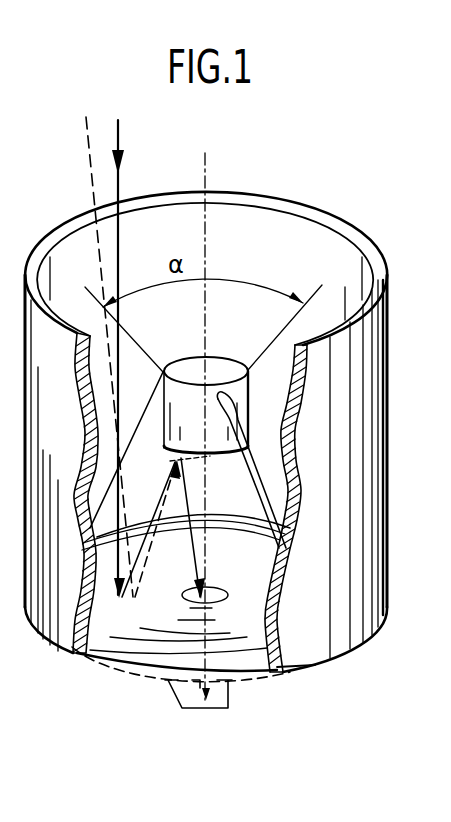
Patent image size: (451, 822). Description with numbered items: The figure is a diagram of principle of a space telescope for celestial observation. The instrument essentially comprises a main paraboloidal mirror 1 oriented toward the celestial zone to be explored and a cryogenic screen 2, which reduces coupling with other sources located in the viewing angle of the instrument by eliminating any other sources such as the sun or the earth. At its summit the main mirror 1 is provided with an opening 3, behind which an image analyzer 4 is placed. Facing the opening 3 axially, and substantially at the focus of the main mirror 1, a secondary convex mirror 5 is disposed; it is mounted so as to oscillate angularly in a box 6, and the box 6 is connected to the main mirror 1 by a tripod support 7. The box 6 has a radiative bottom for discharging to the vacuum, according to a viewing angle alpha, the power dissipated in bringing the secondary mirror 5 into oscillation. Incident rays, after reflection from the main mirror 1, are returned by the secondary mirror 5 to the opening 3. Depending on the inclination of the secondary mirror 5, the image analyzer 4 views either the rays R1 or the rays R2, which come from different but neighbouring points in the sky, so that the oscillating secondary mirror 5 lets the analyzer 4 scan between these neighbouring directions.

The main paraboloidal mirror 1 is at (150, 641).
The cryogenic screen 2 is at (345, 467).
The opening 3 is at (227, 585).
The image analyzer 4 is at (198, 710).
The secondary convex mirror 5 is at (175, 460).
The box 6 is at (250, 398).
The tripod support 7 is at (134, 437).
The rays R1 is at (120, 142).
The rays R2 is at (90, 154).